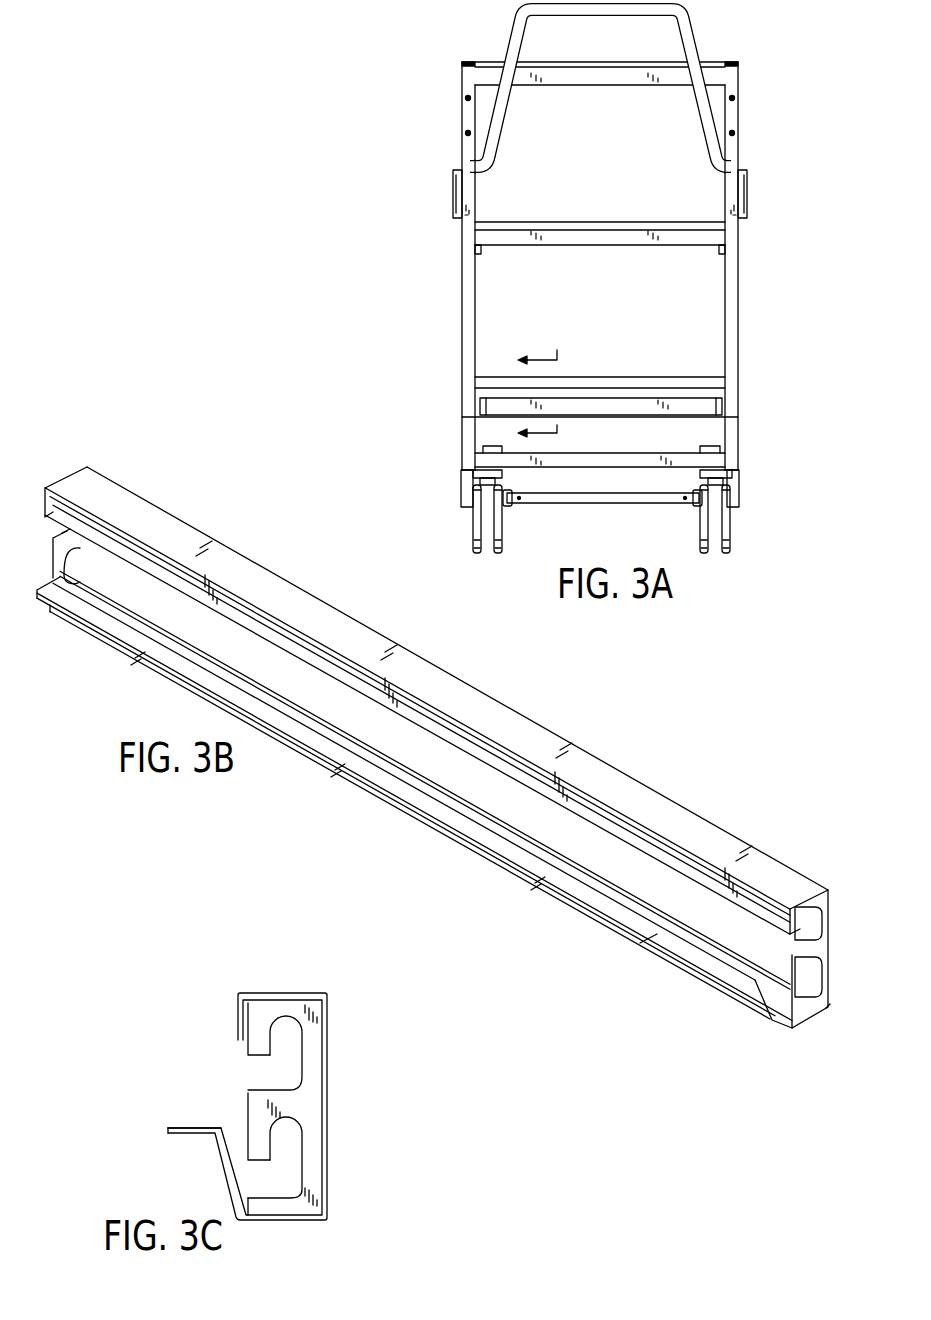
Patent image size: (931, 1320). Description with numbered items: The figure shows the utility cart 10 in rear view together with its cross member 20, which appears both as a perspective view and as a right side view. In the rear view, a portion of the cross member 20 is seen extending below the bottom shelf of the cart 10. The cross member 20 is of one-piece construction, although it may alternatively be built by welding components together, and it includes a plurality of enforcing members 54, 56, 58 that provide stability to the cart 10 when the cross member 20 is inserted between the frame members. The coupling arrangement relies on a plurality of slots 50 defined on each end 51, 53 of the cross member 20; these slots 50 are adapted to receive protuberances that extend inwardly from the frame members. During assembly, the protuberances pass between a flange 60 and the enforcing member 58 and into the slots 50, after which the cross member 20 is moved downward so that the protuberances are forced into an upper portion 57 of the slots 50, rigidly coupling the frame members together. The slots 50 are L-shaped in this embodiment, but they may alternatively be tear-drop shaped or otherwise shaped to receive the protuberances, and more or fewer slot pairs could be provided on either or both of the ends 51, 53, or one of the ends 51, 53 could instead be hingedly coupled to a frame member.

In FIG. 3A, the cart 10 is at (757, 37).
In FIG. 3A, the cross member 20 is at (690, 405).
In FIG. 3B, the cross member 20 is at (441, 773).
In FIG. 3B, the slots 50 is at (36, 538).
In FIG. 3C, the slots 50 is at (264, 1093).
In FIG. 3B, the end 51 is at (826, 1008).
In FIG. 3B, the end 53 is at (62, 533).
In FIG. 3B, the enforcing member 54 is at (455, 777).
In FIG. 3B, the enforcing member 56 is at (471, 714).
In FIG. 3B, the upper portion 57 is at (803, 958).
In FIG. 3C, the upper portion 57 is at (292, 1005).
In FIG. 3B, the enforcing member 58 is at (513, 768).
In FIG. 3B, the flange 60 is at (657, 935).
In FIG. 3C, the flange 60 is at (190, 1137).